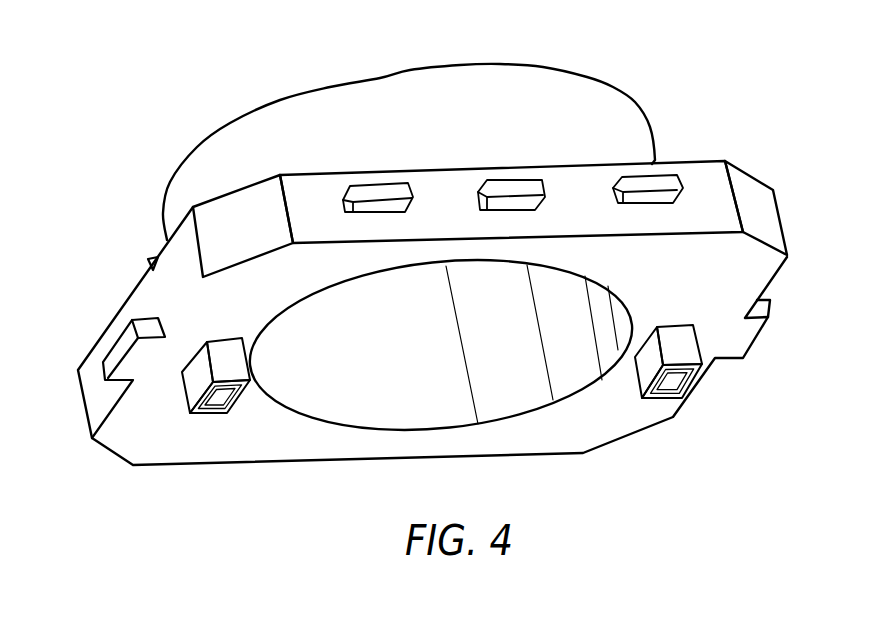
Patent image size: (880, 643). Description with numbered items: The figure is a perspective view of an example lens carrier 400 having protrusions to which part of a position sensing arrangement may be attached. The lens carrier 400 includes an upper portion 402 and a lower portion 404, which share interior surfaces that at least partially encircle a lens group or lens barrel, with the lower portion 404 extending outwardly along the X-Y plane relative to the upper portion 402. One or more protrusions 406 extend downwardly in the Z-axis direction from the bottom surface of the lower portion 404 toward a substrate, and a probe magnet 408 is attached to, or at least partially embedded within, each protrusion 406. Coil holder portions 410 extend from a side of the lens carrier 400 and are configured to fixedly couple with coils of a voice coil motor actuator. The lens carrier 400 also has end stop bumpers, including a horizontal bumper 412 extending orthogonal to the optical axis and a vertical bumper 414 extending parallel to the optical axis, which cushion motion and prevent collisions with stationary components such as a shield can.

The lens carrier 400 is at (150, 76).
The upper portion 402 is at (434, 128).
The lower portion 404 is at (706, 284).
The protrusion 406 is at (218, 347).
The probe magnet 408 is at (217, 413).
The coil holder portion 410 is at (658, 182).
The horizontal bumper 412 is at (125, 340).
The vertical bumper 414 is at (153, 258).